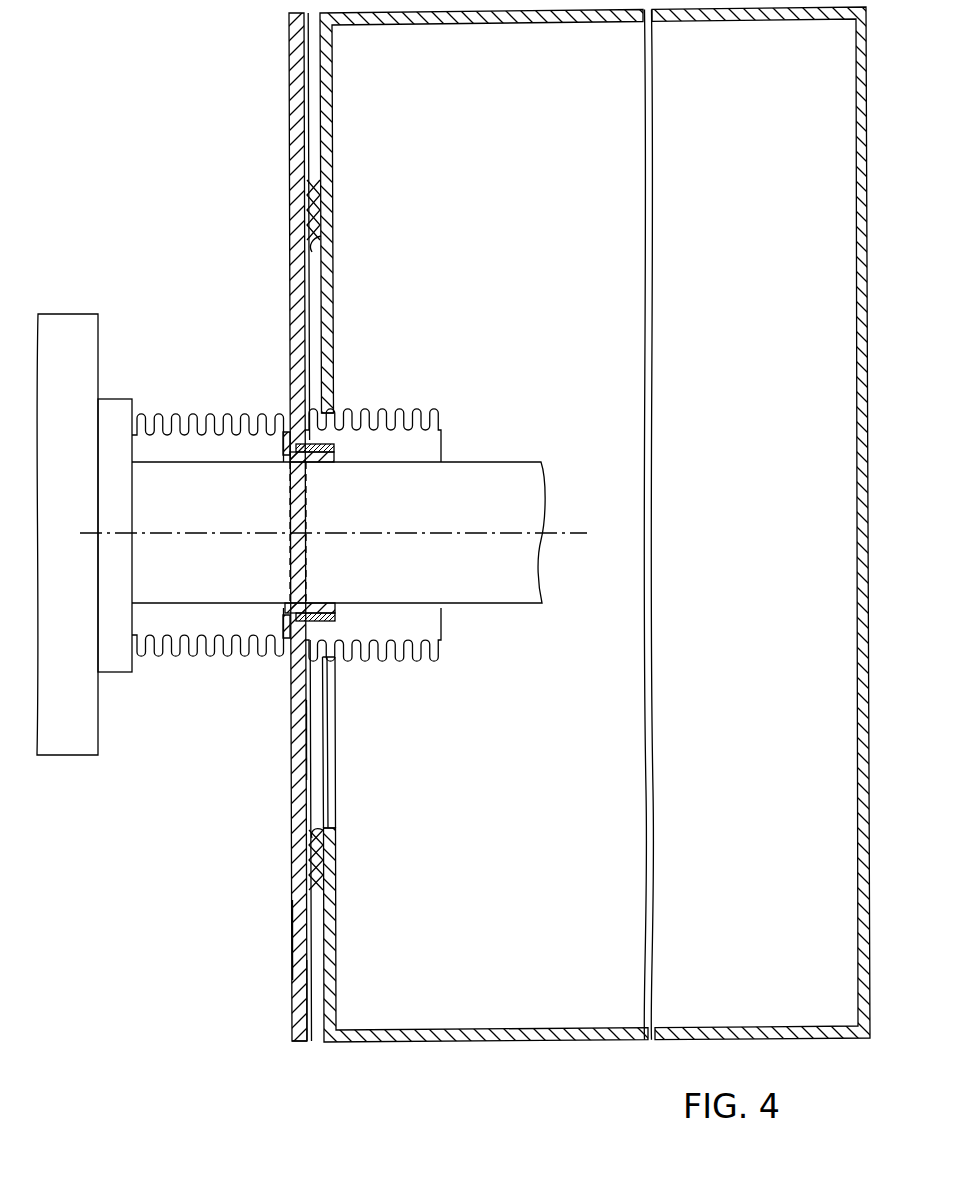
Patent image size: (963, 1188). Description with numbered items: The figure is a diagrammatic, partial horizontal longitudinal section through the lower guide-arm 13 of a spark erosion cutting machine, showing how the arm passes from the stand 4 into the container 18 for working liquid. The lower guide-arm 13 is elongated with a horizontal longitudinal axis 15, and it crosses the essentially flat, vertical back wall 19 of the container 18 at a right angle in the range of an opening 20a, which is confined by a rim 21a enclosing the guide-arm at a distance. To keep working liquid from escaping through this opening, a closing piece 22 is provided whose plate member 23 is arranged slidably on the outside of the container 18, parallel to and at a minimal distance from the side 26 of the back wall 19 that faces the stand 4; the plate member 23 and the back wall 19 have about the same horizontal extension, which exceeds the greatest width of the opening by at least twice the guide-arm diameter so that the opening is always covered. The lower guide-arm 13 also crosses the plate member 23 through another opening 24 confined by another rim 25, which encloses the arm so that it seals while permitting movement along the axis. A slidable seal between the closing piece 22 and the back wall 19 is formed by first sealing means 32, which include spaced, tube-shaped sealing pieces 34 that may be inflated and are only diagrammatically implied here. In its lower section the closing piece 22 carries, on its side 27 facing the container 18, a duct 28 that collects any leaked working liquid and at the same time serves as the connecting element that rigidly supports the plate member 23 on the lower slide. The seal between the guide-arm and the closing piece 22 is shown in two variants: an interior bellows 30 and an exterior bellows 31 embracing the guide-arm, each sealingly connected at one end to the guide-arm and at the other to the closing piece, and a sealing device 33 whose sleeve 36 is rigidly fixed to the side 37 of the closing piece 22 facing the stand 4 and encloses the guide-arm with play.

The stand 4 is at (68, 306).
The lower guide-arm 13 is at (497, 475).
The longitudinal axis 15 is at (561, 532).
The container 18 is at (478, 1052).
The back wall 19 is at (341, 130).
The opening 20a is at (330, 756).
The rim 21a is at (333, 815).
The closing piece 22 is at (298, 1052).
The plate member 23 is at (281, 121).
The other opening 24 is at (289, 492).
The other rim 25 is at (296, 458).
The side of the back wall 26 is at (322, 742).
The side of the closing piece 27 is at (306, 710).
The duct 28 is at (318, 993).
The interior bellows 30 is at (386, 412).
The exterior bellows 31 is at (190, 415).
The first sealing means 32 is at (343, 208).
The sealing device 33 is at (346, 452).
The sealing pieces 34 is at (316, 246).
The sleeve 36 is at (330, 612).
The side of the closing piece 37 is at (292, 935).